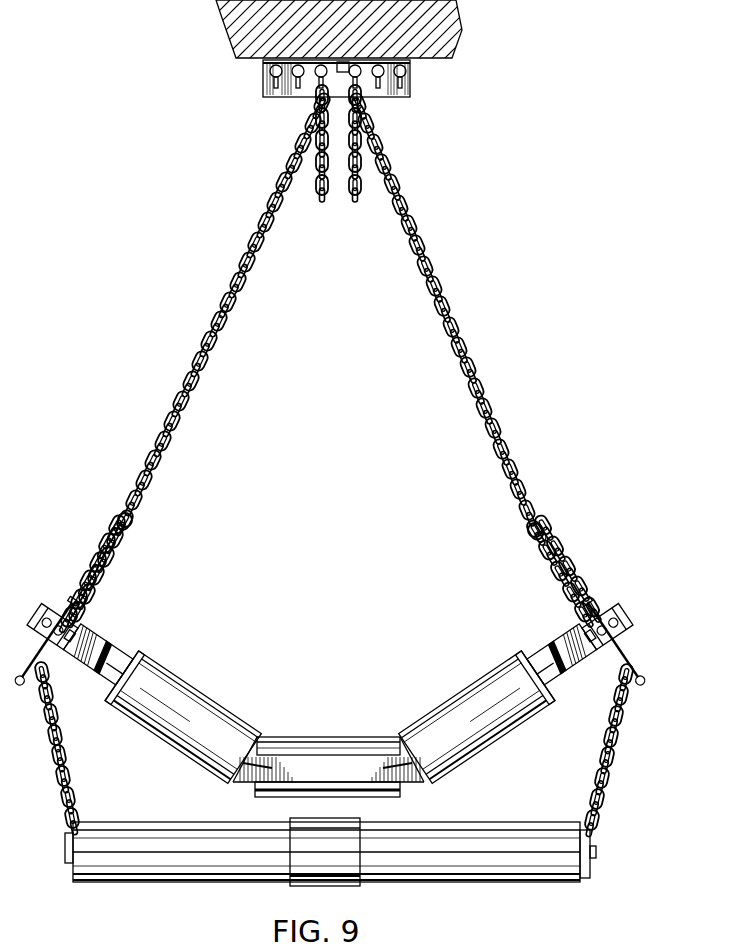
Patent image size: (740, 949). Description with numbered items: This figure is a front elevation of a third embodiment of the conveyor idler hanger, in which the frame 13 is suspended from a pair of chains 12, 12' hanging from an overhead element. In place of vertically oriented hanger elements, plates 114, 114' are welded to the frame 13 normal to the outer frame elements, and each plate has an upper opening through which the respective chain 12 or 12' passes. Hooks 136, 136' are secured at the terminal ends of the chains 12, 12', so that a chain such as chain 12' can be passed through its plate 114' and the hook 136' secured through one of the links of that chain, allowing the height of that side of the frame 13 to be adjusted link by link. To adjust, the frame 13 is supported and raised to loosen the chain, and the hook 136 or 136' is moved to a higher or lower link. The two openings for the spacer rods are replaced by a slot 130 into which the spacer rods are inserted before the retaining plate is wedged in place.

The chain 12 is at (226, 304).
The chain 12' is at (444, 309).
The frame 13 is at (88, 657).
The plate 114 is at (105, 625).
The plate 114' is at (532, 649).
The slot 130 is at (610, 612).
The hook 136 is at (95, 556).
The hook 136' is at (568, 558).